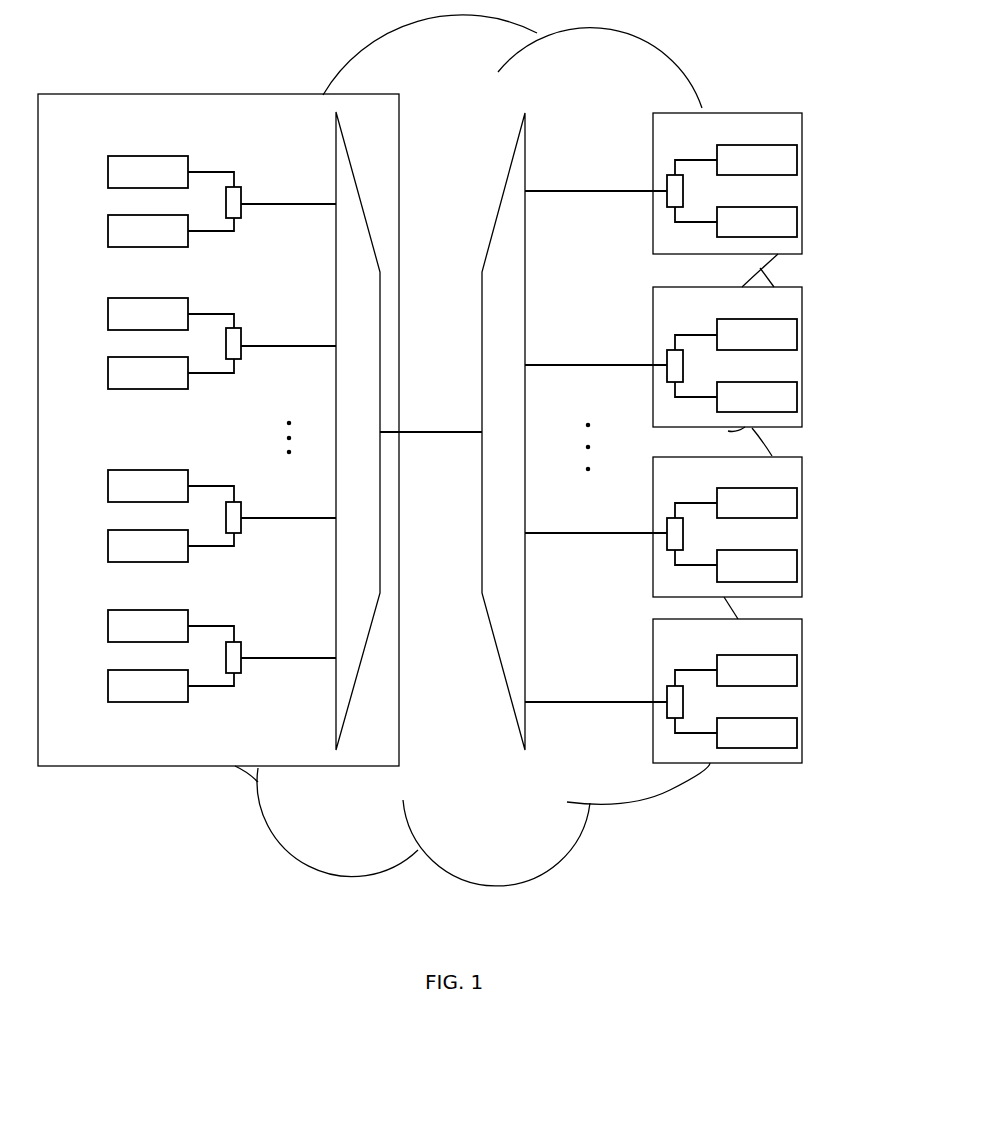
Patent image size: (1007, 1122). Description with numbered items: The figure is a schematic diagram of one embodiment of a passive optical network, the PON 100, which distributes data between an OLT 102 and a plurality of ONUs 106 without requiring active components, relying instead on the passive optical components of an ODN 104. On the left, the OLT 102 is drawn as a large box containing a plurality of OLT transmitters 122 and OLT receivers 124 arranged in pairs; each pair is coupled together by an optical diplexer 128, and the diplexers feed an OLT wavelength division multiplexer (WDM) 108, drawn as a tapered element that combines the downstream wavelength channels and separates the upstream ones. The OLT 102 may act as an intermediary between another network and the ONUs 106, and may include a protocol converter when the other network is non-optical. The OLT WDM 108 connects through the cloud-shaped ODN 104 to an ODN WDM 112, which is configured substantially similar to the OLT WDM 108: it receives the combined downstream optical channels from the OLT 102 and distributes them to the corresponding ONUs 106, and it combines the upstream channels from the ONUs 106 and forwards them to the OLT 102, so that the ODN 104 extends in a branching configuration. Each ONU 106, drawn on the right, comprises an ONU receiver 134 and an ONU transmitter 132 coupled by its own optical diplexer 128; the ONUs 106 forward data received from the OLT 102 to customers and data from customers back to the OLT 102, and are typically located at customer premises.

The PON 100 is at (116, 843).
The OLT 102 is at (163, 94).
The ODN 104 is at (617, 63).
The ONU 106 is at (803, 133).
The OLT wavelength division multiplexer 108 is at (367, 642).
The ODN WDM 112 is at (493, 642).
The OLT transmitter 122 is at (106, 231).
The OLT receiver 124 is at (106, 172).
The optical diplexer 128 is at (240, 188).
The ONU transmitter 132 is at (797, 222).
The ONU receiver 134 is at (797, 160).